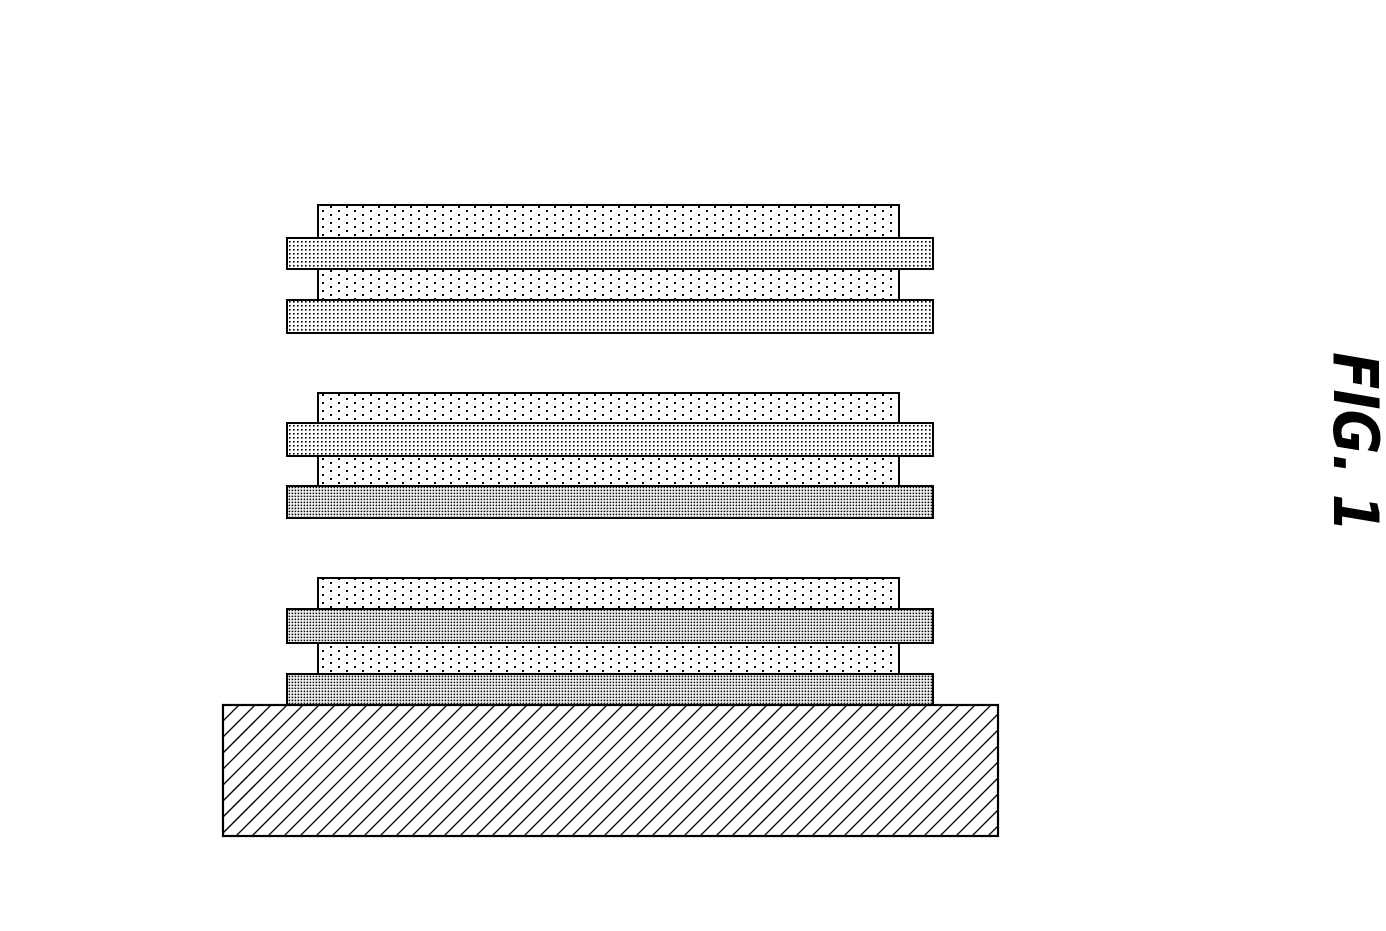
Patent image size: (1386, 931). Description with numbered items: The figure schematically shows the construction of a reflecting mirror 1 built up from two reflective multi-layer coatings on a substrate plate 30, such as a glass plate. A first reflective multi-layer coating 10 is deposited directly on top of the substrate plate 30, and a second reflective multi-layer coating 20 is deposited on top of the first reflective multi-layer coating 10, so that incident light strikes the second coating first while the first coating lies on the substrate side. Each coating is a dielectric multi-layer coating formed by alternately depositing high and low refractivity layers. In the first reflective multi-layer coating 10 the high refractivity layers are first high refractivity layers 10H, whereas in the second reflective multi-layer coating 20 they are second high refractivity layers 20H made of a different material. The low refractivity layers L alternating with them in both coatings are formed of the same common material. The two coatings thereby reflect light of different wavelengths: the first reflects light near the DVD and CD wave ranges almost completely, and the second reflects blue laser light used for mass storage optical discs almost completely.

The reflecting mirror 1 is at (288, 207).
The first reflective multi-layer coating 10 is at (1117, 457).
The first high refractivity layers 10H is at (927, 503).
The second reflective multi-layer coating 20 is at (1117, 200).
The second high refractivity layers 20H is at (927, 255).
The low refractivity layers L is at (893, 222).
The substrate plate 30 is at (980, 787).